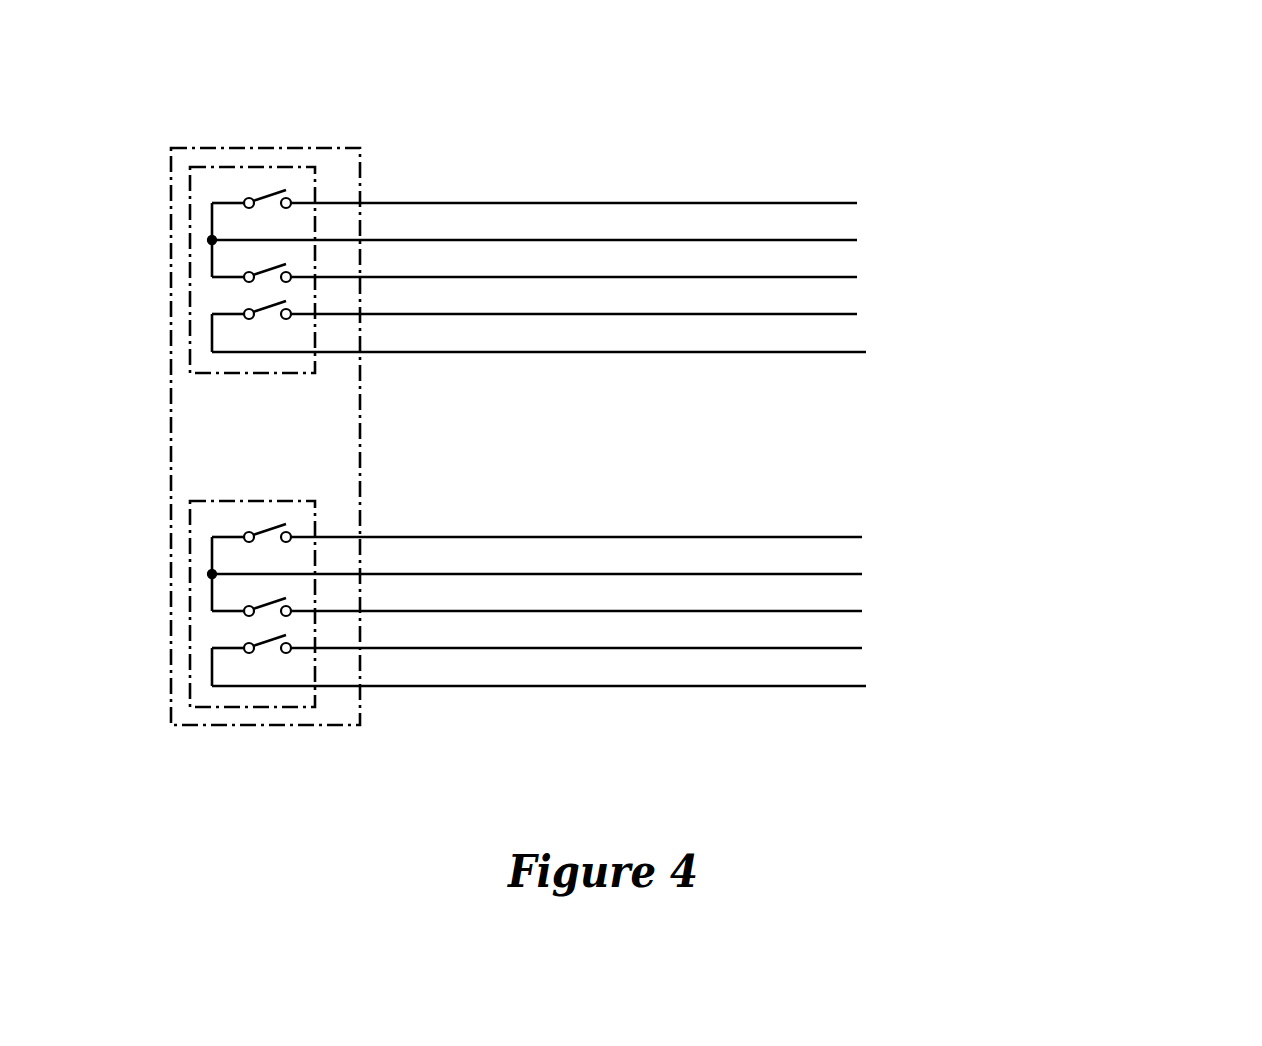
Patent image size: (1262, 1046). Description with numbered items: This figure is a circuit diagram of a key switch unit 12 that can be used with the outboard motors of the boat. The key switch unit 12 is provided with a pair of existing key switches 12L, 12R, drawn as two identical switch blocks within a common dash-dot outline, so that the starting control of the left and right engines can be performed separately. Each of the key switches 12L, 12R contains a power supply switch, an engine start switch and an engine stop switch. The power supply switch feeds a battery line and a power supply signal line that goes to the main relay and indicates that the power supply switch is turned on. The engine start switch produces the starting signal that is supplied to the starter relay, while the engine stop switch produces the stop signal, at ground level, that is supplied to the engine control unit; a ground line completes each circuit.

The key switch unit 12 is at (332, 148).
The key switch 12R is at (471, 245).
The key switch 12L is at (471, 579).